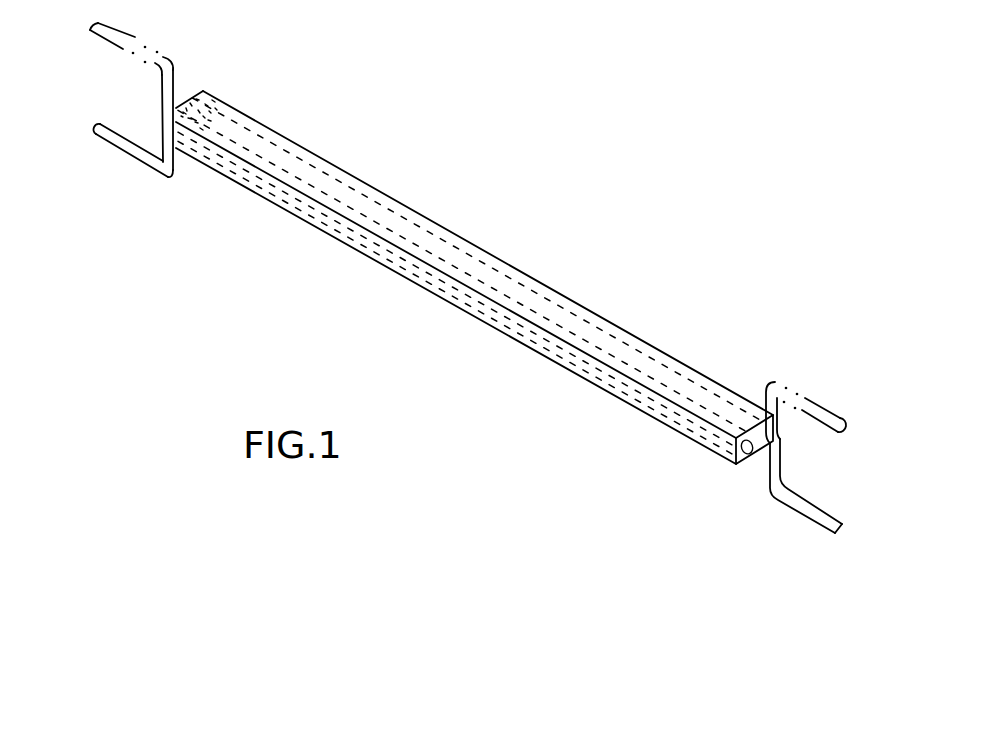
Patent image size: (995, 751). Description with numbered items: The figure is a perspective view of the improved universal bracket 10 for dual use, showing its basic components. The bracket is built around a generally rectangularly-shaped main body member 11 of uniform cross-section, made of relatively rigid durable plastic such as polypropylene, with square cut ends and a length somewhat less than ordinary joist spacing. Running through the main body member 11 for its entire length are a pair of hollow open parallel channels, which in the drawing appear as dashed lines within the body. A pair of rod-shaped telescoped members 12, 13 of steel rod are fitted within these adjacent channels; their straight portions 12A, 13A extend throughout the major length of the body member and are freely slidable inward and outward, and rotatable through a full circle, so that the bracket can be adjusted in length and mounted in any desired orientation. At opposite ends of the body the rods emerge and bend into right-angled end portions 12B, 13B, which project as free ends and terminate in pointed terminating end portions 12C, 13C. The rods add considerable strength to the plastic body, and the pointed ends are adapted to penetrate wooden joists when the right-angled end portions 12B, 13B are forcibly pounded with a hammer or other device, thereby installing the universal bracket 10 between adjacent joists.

The universal bracket 10 is at (573, 276).
The main body member 11 is at (516, 341).
The rod-shaped telescoped member 12 is at (781, 455).
The straight portion 12A is at (353, 202).
The right-angled end portion 12B is at (790, 508).
The pointed terminating end portion 12C is at (838, 538).
The rod-shaped telescoped member 13 is at (124, 150).
The straight portion 13A is at (417, 258).
The right-angled end portion 13B is at (173, 178).
The pointed terminating end portion 13C is at (97, 126).